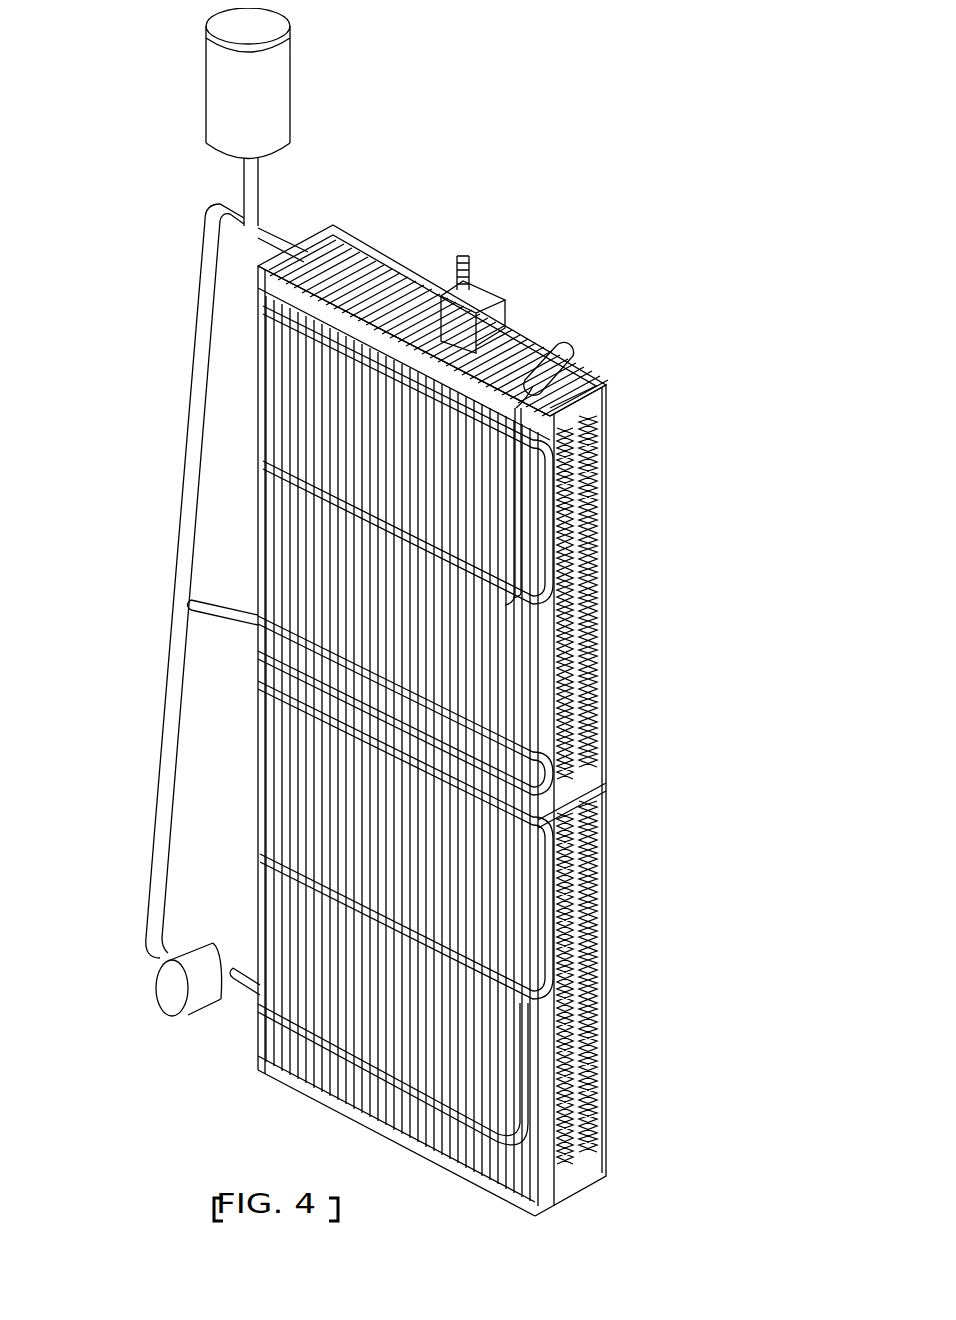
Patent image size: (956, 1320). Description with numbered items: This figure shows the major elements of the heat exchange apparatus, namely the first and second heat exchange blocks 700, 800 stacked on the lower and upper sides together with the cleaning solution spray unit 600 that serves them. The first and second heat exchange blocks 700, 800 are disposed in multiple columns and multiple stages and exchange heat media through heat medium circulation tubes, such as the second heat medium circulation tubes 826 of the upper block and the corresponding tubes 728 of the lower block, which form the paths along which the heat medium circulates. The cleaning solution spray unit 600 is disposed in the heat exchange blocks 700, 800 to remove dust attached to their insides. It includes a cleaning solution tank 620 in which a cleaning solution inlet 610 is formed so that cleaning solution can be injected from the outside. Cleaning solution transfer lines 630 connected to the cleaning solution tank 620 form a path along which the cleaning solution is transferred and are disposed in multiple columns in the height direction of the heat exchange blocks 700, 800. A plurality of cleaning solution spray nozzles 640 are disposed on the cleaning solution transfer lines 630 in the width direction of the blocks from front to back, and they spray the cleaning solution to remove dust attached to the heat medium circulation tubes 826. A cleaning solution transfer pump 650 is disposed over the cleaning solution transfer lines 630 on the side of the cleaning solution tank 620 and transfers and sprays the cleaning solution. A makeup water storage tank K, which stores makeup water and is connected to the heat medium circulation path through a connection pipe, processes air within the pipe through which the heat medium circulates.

The makeup water storage tank K is at (283, 95).
The cleaning solution spray unit 600 is at (595, 326).
The cleaning solution inlet 610 is at (456, 246).
The cleaning solution tank 620 is at (478, 282).
The cleaning solution transfer lines 630 is at (269, 304).
The cleaning solution spray nozzles 640 is at (299, 330).
The cleaning solution transfer pump 650 is at (553, 334).
The first heat exchange block 700 is at (615, 942).
The lower side fin 728 is at (590, 1015).
The second heat exchange block 800 is at (615, 668).
The second heat medium circulation tubes 826 is at (588, 488).